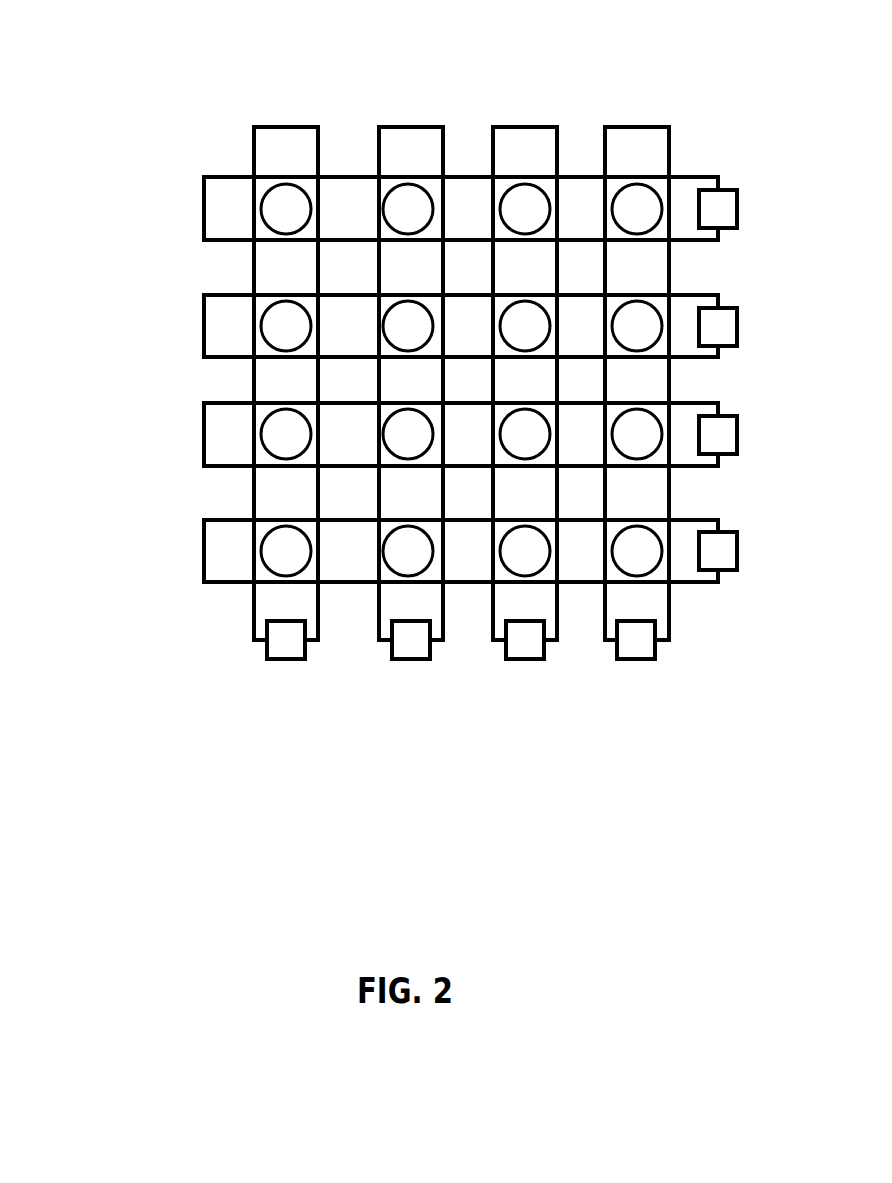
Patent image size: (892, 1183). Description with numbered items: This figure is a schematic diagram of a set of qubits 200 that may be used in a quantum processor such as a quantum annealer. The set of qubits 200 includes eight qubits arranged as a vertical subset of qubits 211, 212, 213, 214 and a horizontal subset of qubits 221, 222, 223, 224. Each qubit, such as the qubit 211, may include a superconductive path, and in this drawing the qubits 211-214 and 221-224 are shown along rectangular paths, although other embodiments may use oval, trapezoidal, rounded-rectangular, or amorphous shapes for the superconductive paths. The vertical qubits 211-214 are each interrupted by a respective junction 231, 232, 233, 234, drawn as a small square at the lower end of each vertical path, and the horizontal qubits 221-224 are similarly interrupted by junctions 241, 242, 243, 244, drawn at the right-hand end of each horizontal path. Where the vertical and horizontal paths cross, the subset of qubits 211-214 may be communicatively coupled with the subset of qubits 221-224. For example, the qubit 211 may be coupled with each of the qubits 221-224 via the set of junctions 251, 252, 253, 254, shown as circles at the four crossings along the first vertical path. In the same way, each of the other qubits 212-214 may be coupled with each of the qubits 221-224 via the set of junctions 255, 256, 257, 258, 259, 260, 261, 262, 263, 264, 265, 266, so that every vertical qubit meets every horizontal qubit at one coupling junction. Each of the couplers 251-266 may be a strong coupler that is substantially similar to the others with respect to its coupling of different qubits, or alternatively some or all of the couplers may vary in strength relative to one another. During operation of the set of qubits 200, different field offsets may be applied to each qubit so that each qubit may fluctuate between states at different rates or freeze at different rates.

The set of qubits 200 is at (118, 40).
The qubit 211 is at (287, 127).
The qubit 212 is at (413, 127).
The qubit 213 is at (543, 127).
The qubit 214 is at (642, 127).
The qubit 221 is at (203, 215).
The qubit 222 is at (203, 333).
The qubit 223 is at (203, 436).
The qubit 224 is at (203, 553).
The junction 231 is at (287, 660).
The junction 232 is at (411, 660).
The junction 233 is at (525, 660).
The junction 234 is at (636, 660).
The junction 241 is at (737, 207).
The junction 242 is at (737, 325).
The junction 243 is at (737, 434).
The junction 244 is at (737, 550).
The junction 251 is at (286, 209).
The junction 252 is at (286, 326).
The junction 253 is at (286, 434).
The junction 254 is at (286, 551).
The junction 255 is at (408, 209).
The junction 256 is at (408, 326).
The junction 257 is at (408, 434).
The junction 258 is at (408, 551).
The junction 259 is at (525, 209).
The junction 260 is at (525, 326).
The junction 261 is at (525, 434).
The junction 262 is at (525, 551).
The junction 263 is at (637, 209).
The junction 264 is at (637, 326).
The junction 265 is at (637, 434).
The junction 266 is at (637, 551).